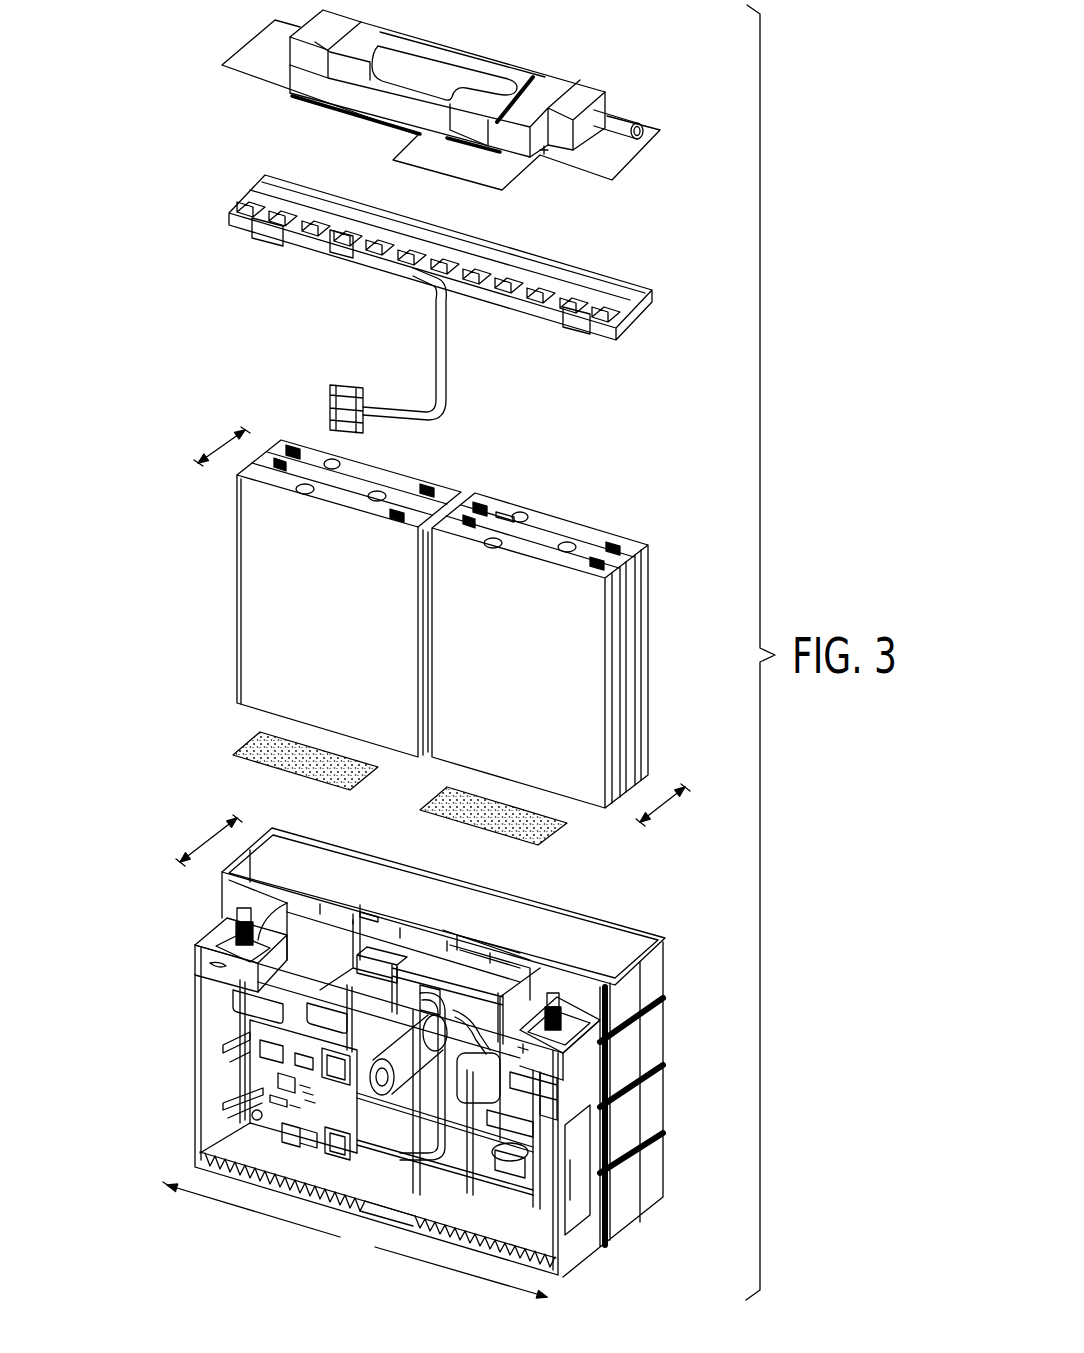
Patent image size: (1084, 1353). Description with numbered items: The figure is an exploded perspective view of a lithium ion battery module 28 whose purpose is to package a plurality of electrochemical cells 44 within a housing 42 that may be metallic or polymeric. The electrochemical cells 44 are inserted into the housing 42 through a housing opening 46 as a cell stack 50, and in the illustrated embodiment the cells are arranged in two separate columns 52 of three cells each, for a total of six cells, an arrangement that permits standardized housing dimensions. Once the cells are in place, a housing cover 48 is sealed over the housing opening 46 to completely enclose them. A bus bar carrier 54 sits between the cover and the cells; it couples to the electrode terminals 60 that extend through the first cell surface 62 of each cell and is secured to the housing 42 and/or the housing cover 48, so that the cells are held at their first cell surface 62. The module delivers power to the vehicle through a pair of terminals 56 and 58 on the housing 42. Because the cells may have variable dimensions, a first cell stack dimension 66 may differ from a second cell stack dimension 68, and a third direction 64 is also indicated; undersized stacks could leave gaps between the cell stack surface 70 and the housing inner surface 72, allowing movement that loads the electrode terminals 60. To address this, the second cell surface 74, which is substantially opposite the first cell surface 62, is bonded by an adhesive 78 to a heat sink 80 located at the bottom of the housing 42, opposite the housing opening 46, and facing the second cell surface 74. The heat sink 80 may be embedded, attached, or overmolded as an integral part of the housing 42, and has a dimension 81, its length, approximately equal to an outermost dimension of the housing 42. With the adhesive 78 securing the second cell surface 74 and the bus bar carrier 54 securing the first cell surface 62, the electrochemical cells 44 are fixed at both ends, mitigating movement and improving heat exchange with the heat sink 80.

The lithium ion battery module 28 is at (183, 27).
The housing 42 is at (657, 1037).
The electrochemical cells 44 is at (647, 567).
The housing opening 46 is at (323, 827).
The housing cover 48 is at (640, 153).
The cell stack 50 is at (658, 670).
The columns 52 is at (385, 458).
The bus bar carrier 54 is at (633, 312).
The terminal 56 is at (240, 908).
The terminal 58 is at (552, 993).
The electrode terminals 60 is at (615, 540).
The first cell surface 62 is at (505, 510).
The width direction 64 is at (197, 840).
The first cell stack dimension 66 is at (220, 447).
The second cell stack dimension 68 is at (667, 808).
The cell stack surface 70 is at (267, 590).
The housing inner surface 72 is at (532, 922).
The second cell surface 74 is at (258, 710).
The adhesive 78 is at (248, 760).
The heat sink 80 is at (540, 1243).
The dimension 81 is at (355, 1240).